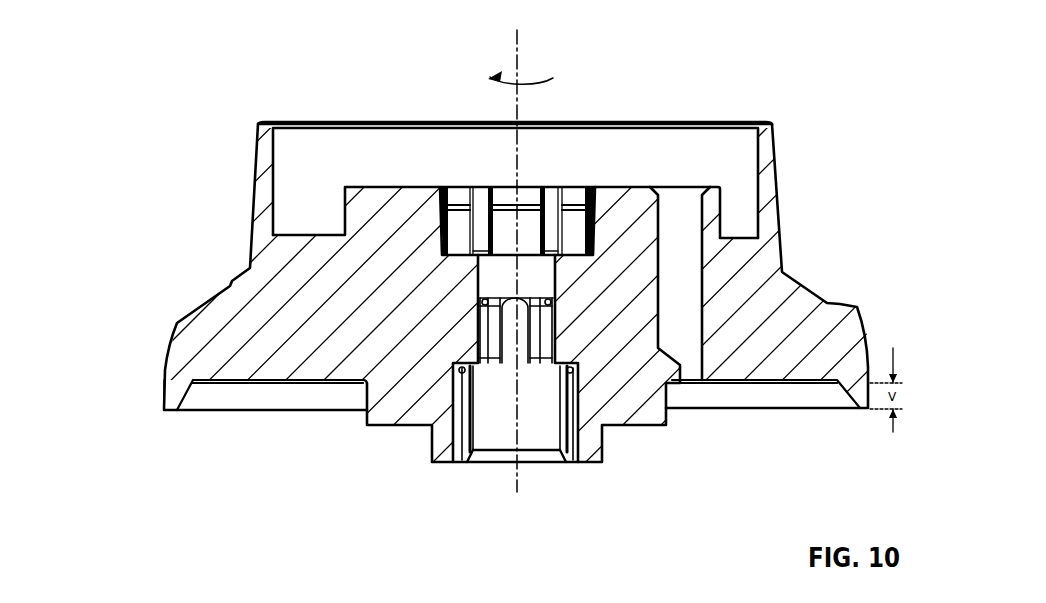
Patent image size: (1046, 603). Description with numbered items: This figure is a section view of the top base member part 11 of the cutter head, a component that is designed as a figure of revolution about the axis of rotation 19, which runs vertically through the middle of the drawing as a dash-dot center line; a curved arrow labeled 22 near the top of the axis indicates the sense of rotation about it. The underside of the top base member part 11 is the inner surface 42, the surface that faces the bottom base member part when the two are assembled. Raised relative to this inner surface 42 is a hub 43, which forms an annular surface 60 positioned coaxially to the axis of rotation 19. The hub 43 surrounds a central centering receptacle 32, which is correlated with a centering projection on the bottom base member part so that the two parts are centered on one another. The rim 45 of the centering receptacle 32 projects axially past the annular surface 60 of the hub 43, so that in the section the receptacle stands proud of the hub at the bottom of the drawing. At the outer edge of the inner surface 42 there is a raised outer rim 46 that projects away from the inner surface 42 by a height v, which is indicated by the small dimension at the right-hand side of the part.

The top base member part 11 is at (195, 335).
The axis of rotation 19 is at (516, 68).
The direction of rotation 22 is at (548, 78).
The centering receptacle 32 is at (500, 410).
The inner surface 42 is at (264, 407).
The hub 43 is at (378, 418).
The rim 45 is at (593, 447).
The raised outer rim 46 is at (173, 397).
The annular surface 60 is at (387, 428).